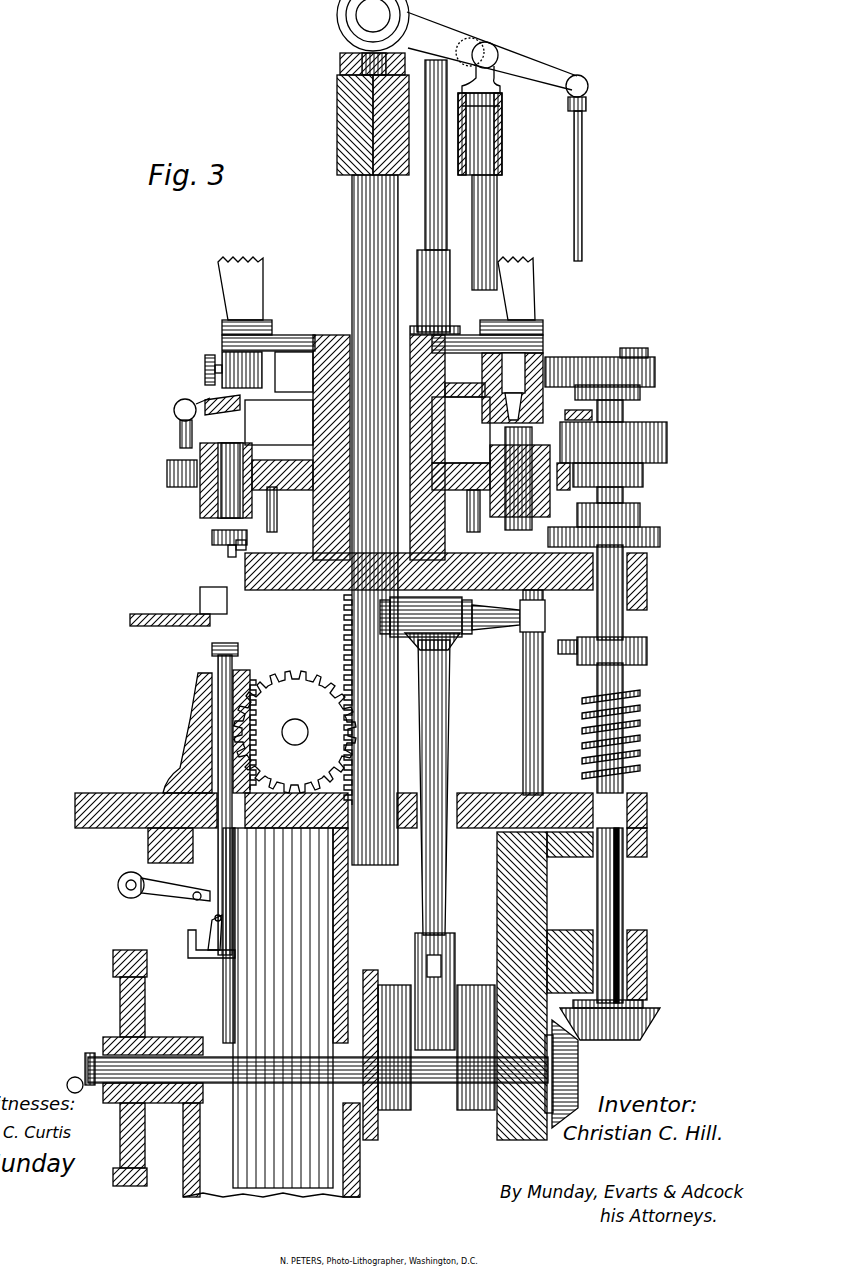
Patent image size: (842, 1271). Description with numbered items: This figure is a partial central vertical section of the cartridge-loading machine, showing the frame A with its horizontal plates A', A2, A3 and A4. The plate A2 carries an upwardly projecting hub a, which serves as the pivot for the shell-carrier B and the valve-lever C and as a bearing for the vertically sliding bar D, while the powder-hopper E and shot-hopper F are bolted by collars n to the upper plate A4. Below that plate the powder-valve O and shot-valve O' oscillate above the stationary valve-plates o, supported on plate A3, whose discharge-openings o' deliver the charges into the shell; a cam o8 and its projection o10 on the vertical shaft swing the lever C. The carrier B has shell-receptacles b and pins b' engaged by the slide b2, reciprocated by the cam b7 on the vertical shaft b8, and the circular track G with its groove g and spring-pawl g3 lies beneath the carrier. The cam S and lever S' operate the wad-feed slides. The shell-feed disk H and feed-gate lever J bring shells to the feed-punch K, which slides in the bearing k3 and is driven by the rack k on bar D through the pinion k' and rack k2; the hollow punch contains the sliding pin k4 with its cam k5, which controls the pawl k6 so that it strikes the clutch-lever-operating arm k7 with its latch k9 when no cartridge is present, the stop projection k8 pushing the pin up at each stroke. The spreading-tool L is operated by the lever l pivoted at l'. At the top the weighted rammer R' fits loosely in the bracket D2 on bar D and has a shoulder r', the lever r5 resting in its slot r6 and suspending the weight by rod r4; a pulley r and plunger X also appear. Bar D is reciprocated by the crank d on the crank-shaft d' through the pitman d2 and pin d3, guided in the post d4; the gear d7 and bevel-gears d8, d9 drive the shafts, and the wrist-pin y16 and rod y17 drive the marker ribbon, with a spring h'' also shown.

The pulley r is at (373, 25).
The slot r6 is at (478, 44).
The lever r5 is at (560, 66).
The shoulder r' is at (501, 101).
The bracket-arm D2 is at (503, 140).
The rod r4 is at (583, 182).
The weighted rammer R' is at (500, 232).
The powder-hopper E is at (250, 304).
The collar n is at (273, 328).
The frame-plate A4 is at (318, 334).
The shot-hopper F is at (522, 304).
The valve-lever C is at (305, 380).
The powder-valve O is at (210, 370).
The valve-plate o is at (415, 382).
The spreading-tool L is at (205, 405).
The lever l is at (170, 423).
The pivot l' is at (179, 410).
The shell-carrier B is at (300, 465).
The pins b' is at (373, 509).
The shell-receptacles b is at (182, 495).
The discharge-openings o' is at (494, 388).
The boss or hub a is at (412, 432).
The plunger X is at (520, 478).
The circular track G is at (178, 543).
The groove g is at (226, 548).
The spring-pawl g3 is at (238, 548).
The projection o10 is at (648, 352).
The cam o8 is at (656, 370).
The shot-valve O' is at (614, 356).
The lever S' is at (626, 411).
The cam S is at (613, 442).
The frame-plate A3 is at (645, 485).
The vertical shaft b8 is at (625, 497).
The cam b7 is at (642, 517).
The reciprocating slide b2 is at (662, 540).
The frame-plate A2 is at (262, 590).
The feed-gate lever J is at (200, 600).
The shell-feed disk H is at (140, 627).
The sliding pin k4 is at (236, 672).
The feed-punch K is at (250, 682).
The bearing k3 is at (198, 735).
The pinion k' is at (295, 732).
The rack k2 is at (246, 745).
The rack k is at (337, 700).
The pin d3 is at (492, 636).
The post d4 is at (524, 683).
The pitman d2 is at (444, 918).
The frame-plate A' is at (361, 789).
The spring h'' is at (618, 708).
The frame A is at (397, 1012).
The clutch-lever-operating arm k7 is at (166, 896).
The pivoted latch k9 is at (194, 902).
The pawl k6 is at (222, 925).
The cam k5 is at (224, 942).
The stop projection k8 is at (190, 952).
The gear d7 is at (115, 968).
The crank-shaft d' is at (318, 1083).
The crank d is at (436, 1047).
The wrist-pin y16 is at (90, 1055).
The link or rod y17 is at (63, 1086).
The bevel-gear d9 is at (645, 1030).
The bevel-gear d8 is at (580, 1080).